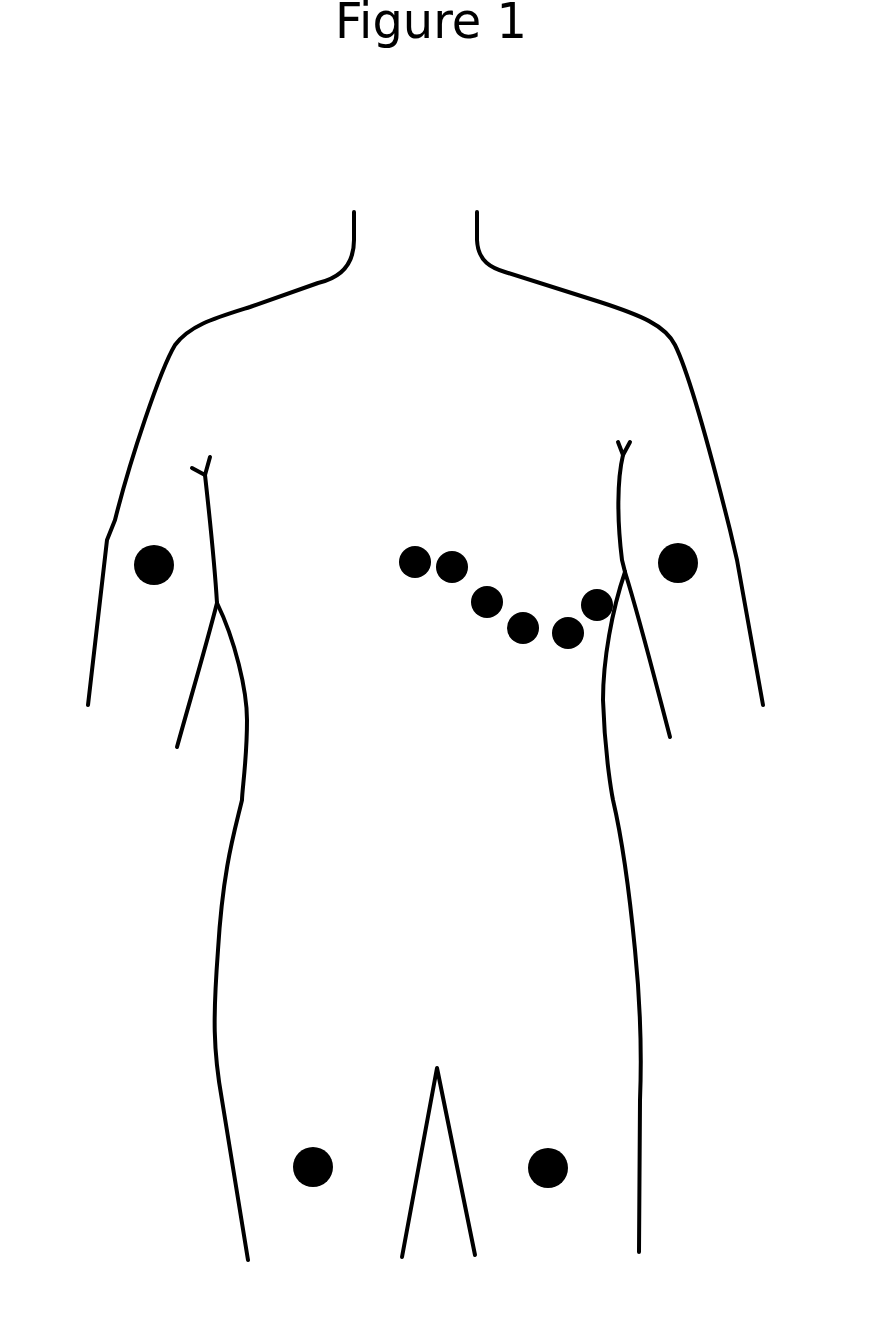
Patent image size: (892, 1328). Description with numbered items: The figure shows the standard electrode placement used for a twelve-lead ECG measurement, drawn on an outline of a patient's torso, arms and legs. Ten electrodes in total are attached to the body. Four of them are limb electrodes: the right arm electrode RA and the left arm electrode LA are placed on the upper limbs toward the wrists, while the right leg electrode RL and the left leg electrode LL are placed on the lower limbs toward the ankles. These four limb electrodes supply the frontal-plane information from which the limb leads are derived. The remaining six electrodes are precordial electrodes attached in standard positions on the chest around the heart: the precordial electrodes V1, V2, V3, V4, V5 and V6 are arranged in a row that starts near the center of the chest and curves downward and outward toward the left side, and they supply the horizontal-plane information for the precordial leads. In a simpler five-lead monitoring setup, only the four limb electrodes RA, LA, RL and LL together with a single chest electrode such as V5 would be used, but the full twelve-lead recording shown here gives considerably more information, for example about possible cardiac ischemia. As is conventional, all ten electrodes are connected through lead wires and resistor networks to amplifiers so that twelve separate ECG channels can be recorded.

The right arm electrode RA is at (133, 669).
The left arm electrode LA is at (707, 658).
The right leg electrode RL is at (324, 1204).
The left leg electrode LL is at (558, 1205).
The precordial electrode V1 is at (393, 562).
The precordial electrode V2 is at (437, 578).
The precordial electrode V3 is at (477, 608).
The precordial electrode V4 is at (510, 637).
The precordial electrode V5 is at (557, 645).
The precordial electrode V6 is at (607, 643).